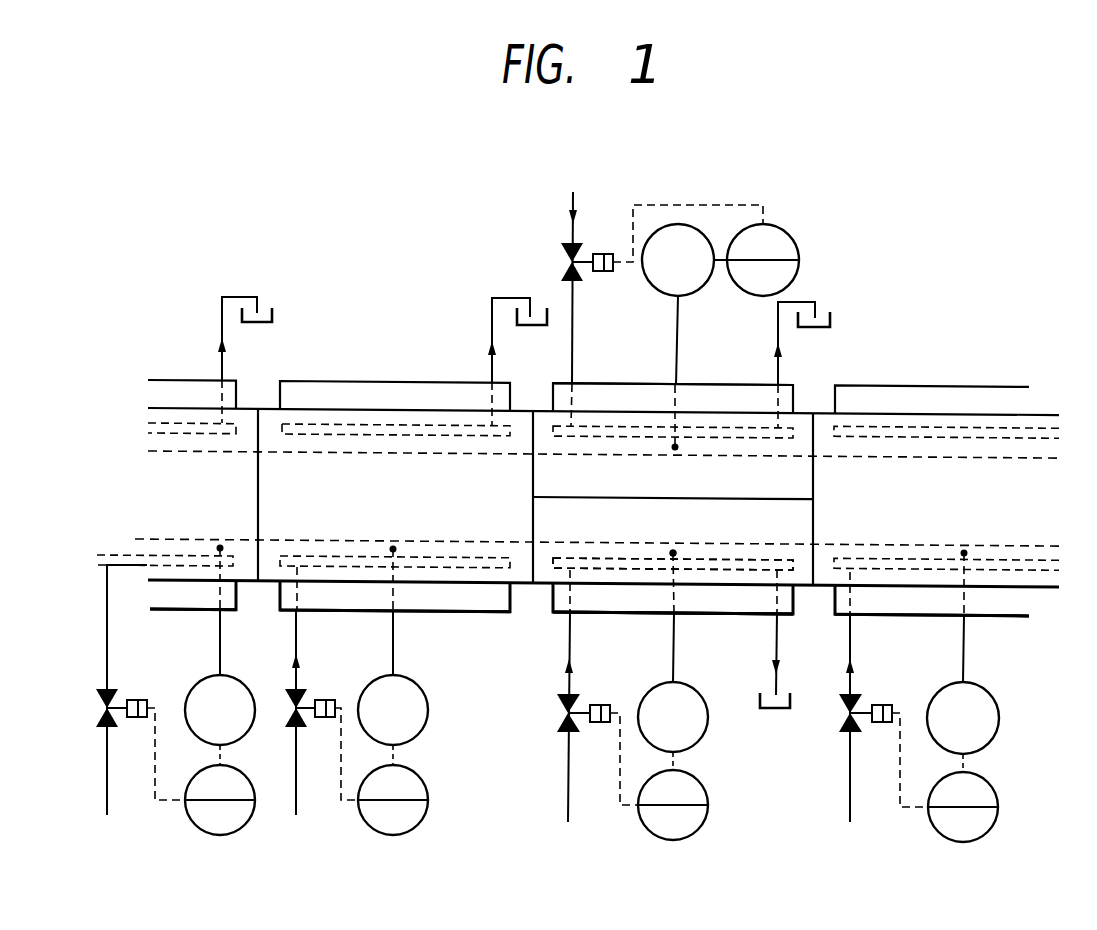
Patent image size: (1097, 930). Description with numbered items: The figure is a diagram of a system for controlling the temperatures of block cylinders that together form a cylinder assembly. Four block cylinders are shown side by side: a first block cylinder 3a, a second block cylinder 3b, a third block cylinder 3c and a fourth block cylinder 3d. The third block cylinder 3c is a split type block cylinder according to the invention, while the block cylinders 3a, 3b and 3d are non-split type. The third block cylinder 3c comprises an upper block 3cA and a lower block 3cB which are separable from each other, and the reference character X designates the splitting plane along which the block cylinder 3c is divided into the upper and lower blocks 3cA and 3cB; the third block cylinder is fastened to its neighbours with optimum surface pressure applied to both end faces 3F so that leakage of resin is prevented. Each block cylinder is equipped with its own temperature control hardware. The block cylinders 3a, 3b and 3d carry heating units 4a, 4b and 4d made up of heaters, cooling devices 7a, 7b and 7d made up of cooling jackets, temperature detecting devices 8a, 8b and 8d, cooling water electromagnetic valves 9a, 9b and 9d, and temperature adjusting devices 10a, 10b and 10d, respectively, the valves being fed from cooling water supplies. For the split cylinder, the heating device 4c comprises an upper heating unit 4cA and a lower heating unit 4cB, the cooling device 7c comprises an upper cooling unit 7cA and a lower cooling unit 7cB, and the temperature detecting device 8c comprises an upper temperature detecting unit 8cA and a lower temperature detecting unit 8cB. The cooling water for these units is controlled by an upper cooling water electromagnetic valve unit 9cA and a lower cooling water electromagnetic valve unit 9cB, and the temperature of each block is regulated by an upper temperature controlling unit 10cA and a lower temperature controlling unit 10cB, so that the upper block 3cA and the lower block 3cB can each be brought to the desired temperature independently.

The first block cylinder 3a is at (138, 575).
The second block cylinder 3b is at (267, 568).
The third block cylinder 3c is at (538, 593).
The fourth block cylinder 3d is at (821, 575).
The upper block 3cA is at (556, 465).
The lower block 3cB is at (750, 553).
The end face 3F is at (533, 512).
The heating unit 4a is at (183, 602).
The heating unit 4b is at (448, 603).
The heating device 4c is at (681, 621).
The heating unit 4d is at (998, 615).
The upper heating unit 4cA is at (714, 384).
The lower heating unit 4cB is at (710, 598).
The cooling device 7a is at (170, 557).
The cooling device 7b is at (343, 557).
The cooling device 7c is at (590, 556).
The cooling device 7d is at (900, 567).
The upper cooling unit 7cA is at (620, 435).
The lower cooling unit 7cB is at (603, 560).
The temperature detecting device 8a is at (220, 548).
The temperature detecting device 8b is at (393, 549).
The temperature detecting device 8c is at (677, 546).
The temperature detecting device 8d is at (964, 553).
The upper temperature detecting unit 8cA is at (675, 447).
The lower temperature detecting unit 8cB is at (673, 553).
The cooling water electromagnetic valve 9a is at (100, 712).
The cooling water electromagnetic valve 9b is at (298, 730).
The upper cooling water electromagnetic valve unit 9cA is at (562, 250).
The lower cooling water electromagnetic valve unit 9cB is at (562, 725).
The cooling water electromagnetic valve 9d is at (845, 730).
The temperature adjusting device 10a is at (207, 834).
The temperature adjusting device 10b is at (417, 828).
The upper temperature controlling unit 10cA is at (800, 232).
The lower temperature controlling unit 10cB is at (698, 830).
The temperature adjusting device 10d is at (990, 833).
The splitting plane X is at (758, 496).